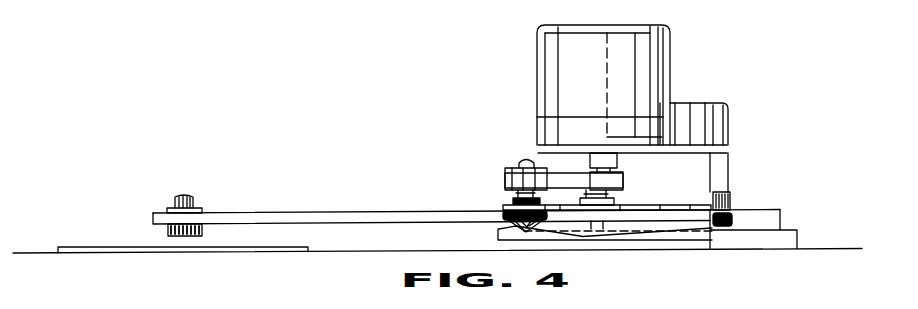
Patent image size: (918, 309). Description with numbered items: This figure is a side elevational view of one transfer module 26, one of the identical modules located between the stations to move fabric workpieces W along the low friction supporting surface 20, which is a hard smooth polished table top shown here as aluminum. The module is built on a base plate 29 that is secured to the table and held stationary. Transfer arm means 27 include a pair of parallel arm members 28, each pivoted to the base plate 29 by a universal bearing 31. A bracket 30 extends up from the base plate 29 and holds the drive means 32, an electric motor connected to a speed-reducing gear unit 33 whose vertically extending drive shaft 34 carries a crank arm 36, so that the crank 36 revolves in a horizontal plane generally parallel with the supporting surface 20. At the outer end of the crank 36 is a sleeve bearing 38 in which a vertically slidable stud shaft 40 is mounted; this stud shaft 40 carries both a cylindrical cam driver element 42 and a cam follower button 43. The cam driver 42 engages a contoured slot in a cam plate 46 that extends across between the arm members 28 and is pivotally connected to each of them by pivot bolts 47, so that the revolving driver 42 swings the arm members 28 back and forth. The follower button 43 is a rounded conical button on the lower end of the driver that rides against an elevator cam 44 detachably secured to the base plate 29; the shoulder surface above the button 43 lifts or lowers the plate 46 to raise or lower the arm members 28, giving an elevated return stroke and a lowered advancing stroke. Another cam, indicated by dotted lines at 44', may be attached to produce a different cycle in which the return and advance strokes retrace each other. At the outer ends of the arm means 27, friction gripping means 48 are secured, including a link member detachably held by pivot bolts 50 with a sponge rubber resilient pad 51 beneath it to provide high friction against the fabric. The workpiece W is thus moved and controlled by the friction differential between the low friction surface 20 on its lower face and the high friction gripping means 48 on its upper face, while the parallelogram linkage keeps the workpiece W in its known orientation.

The supporting surface 20 is at (40, 253).
The transfer module 26 is at (662, 98).
The transfer arm means 27 is at (466, 180).
The arm member 28 is at (337, 211).
The base plate 29 is at (784, 243).
The bracket 30 is at (730, 137).
The universal bearing 31 is at (732, 214).
The drive means 32 is at (545, 78).
The speed-reducing gear unit 33 is at (542, 132).
The drive shaft 34 is at (593, 187).
The crank arm 36 is at (583, 177).
The sleeve bearing 38 is at (508, 178).
The stud shaft 40 is at (525, 160).
The cam driver element 42 is at (513, 200).
The cam follower button 43 is at (497, 233).
The elevator cam 44 is at (605, 250).
The additional cam 44' is at (618, 252).
The cam plate 46 is at (624, 205).
The pivot bolt 47 is at (602, 196).
The friction gripping means 48 is at (164, 190).
The pivot bolt 50 is at (192, 196).
The resilient pad 51 is at (167, 238).
The workpiece W is at (293, 247).